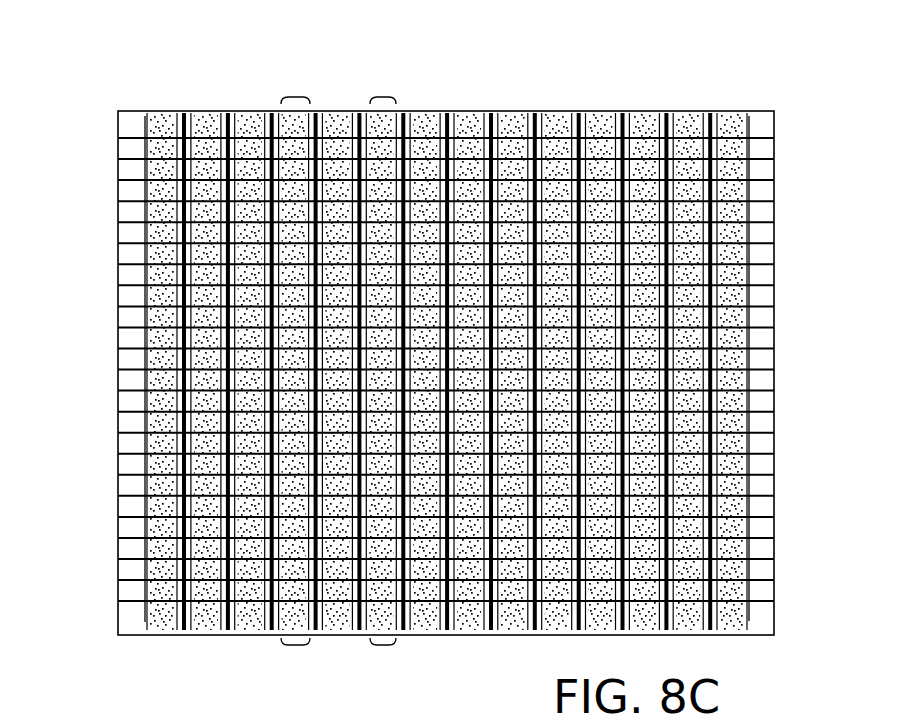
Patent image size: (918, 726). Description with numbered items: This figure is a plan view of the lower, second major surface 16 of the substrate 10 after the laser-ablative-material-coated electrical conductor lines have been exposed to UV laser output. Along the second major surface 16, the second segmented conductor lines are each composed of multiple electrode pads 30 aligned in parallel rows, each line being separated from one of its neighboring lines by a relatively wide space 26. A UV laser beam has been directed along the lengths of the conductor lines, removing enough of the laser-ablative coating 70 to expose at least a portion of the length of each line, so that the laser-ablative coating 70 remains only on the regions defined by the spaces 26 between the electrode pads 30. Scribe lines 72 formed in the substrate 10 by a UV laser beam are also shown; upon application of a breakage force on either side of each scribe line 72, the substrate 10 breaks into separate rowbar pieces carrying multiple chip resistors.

The substrate 10 is at (122, 115).
The second major surface 16 is at (757, 612).
The relatively wide space 26 is at (352, 68).
The electrode pad 30 is at (741, 247).
The laser-ablative coating 70 is at (680, 116).
The scribe line 72 is at (221, 98).